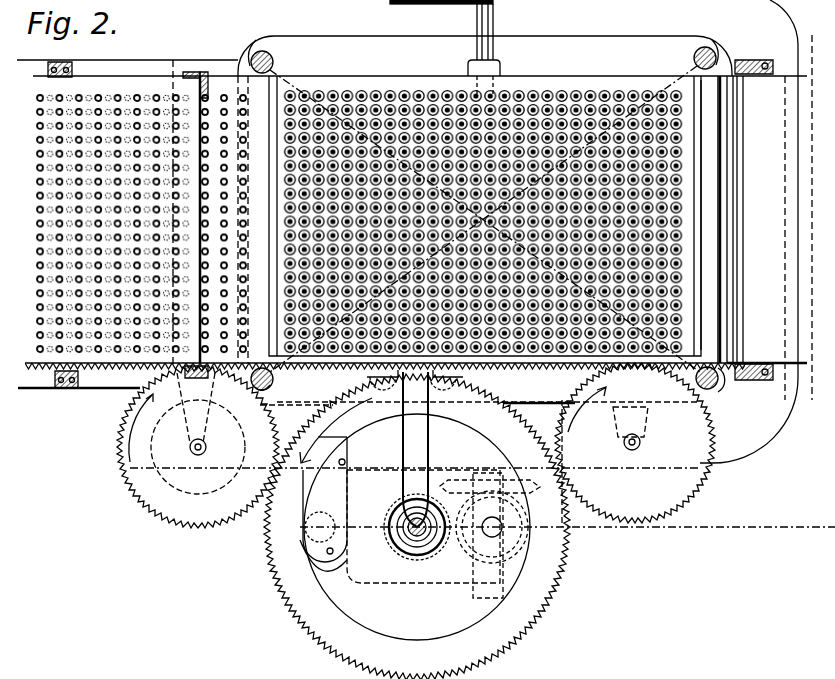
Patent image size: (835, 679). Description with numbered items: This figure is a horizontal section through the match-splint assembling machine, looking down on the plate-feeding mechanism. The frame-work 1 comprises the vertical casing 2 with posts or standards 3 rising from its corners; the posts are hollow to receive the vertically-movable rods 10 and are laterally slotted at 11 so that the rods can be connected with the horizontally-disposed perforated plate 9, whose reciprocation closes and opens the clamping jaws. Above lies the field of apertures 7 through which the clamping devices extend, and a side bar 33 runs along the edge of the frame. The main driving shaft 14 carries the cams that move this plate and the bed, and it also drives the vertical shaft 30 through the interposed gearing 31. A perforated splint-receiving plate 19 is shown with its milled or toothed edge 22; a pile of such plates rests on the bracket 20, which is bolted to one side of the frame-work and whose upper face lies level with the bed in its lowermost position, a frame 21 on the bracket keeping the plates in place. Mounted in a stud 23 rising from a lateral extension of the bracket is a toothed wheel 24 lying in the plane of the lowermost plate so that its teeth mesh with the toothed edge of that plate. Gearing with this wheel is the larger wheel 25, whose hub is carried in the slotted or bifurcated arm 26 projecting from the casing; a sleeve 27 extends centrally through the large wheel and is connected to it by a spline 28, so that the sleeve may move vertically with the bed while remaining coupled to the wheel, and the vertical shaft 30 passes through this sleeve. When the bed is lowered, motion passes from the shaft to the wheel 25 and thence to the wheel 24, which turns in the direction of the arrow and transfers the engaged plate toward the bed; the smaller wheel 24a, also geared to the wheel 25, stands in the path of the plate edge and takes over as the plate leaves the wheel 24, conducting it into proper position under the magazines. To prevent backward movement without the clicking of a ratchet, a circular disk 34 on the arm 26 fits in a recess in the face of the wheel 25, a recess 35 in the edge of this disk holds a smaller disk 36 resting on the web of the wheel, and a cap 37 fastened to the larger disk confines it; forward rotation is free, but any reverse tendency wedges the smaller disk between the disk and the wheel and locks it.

The frame-work 1 is at (657, 36).
The vertical casing 2 is at (584, 36).
The posts or standards 3 is at (262, 51).
The perforated plate 7 is at (470, 92).
The horizontally-disposed perforated plate 9 is at (690, 175).
The vertically-movable rods 10 is at (273, 52).
The lateral slots 11 is at (278, 60).
The main driving shaft 14 is at (474, 15).
The perforated plates 19 is at (752, 286).
The bracket 20 is at (105, 388).
The frame 21 is at (192, 72).
The milled or toothed edge 22 is at (40, 372).
The stud 23 is at (190, 448).
The wheel 24 is at (198, 447).
The smaller wheel 24a is at (697, 492).
The larger wheel 25 is at (535, 598).
The slotted or bifurcated arm 26 is at (420, 456).
The sleeve 27 is at (404, 517).
The spline 28 is at (413, 543).
The vertical shaft 30 is at (412, 538).
The interposed gearing 31 is at (508, 526).
The bar 33 is at (744, 219).
The circular disk 34 is at (548, 556).
The recess 35 is at (312, 498).
The smaller disk 36 is at (317, 527).
The cap 37 is at (313, 560).